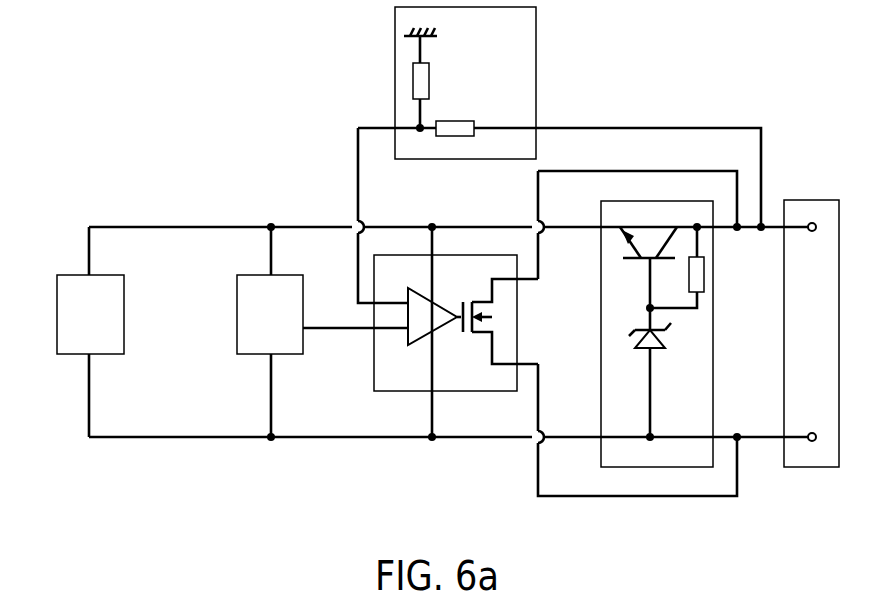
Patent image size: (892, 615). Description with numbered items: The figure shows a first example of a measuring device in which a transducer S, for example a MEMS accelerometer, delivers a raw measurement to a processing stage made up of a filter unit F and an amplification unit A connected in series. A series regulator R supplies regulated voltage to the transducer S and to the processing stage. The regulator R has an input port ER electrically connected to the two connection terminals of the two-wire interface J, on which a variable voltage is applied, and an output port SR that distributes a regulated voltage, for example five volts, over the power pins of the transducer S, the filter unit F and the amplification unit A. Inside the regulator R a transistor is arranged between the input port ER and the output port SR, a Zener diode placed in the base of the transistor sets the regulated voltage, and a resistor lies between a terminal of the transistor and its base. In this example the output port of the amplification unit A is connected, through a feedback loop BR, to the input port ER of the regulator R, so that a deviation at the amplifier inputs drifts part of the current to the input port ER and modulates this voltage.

The transducer S is at (61, 275).
The filter unit F is at (250, 275).
The feedback loop BR is at (395, 33).
The amplification unit A is at (400, 392).
The regulator R is at (655, 389).
The two-wire interface J is at (812, 468).
The output port SR is at (623, 332).
The input port ER is at (695, 278).